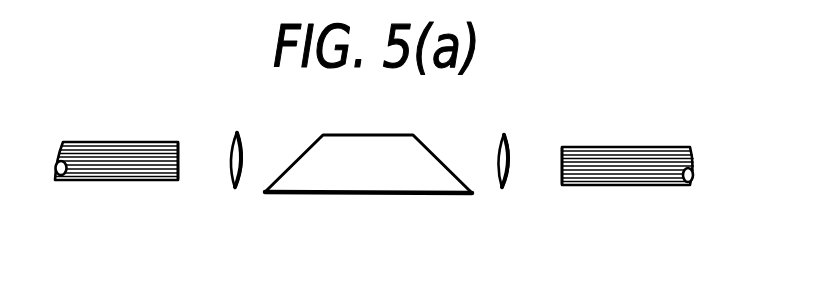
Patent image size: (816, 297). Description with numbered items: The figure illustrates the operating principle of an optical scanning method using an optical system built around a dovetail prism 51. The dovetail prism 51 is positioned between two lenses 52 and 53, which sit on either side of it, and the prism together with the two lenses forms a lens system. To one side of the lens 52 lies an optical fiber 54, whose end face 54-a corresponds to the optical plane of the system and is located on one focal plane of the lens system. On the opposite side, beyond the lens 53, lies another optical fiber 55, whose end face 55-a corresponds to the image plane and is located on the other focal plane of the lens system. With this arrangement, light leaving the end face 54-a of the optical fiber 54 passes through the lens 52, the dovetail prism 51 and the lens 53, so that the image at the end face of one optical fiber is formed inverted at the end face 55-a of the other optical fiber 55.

The dovetail prism 51 is at (398, 189).
The lens 52 is at (235, 189).
The lens 53 is at (502, 189).
The optical fiber 54 is at (122, 181).
The end face 54-a is at (181, 153).
The optical fiber 55 is at (625, 186).
The end face 55-a is at (562, 158).